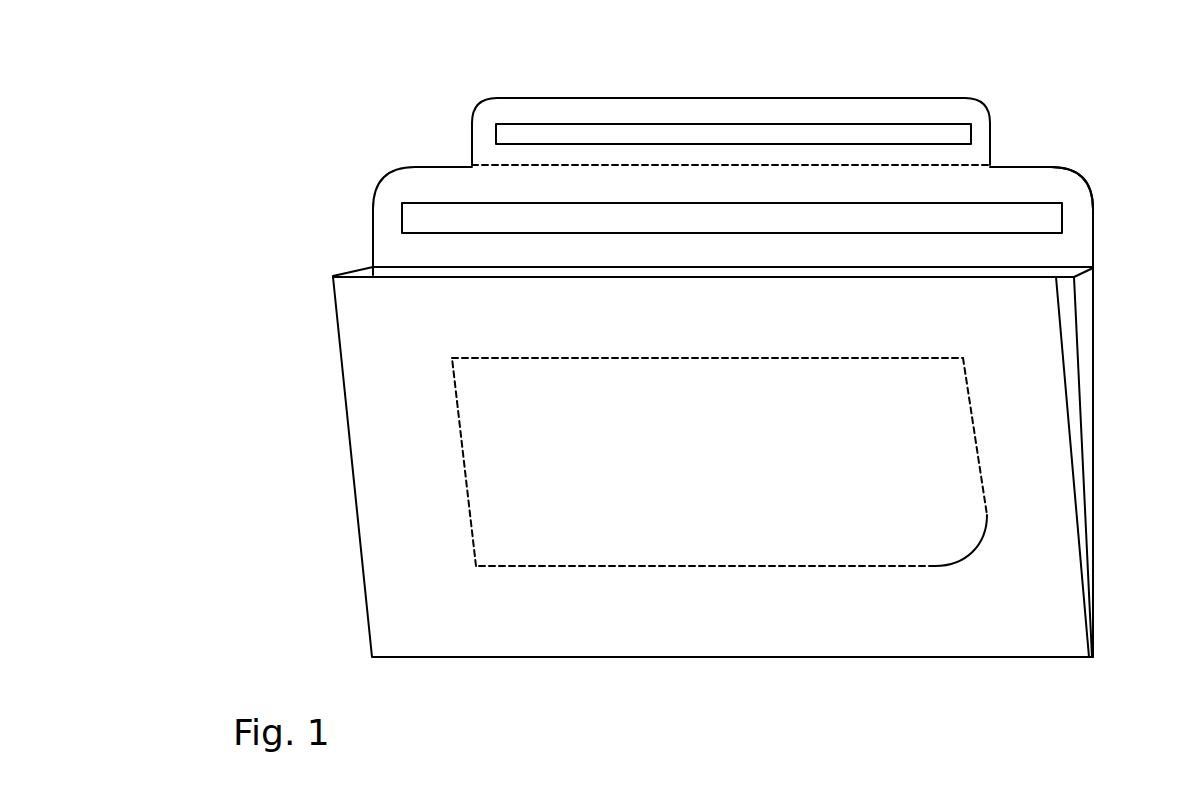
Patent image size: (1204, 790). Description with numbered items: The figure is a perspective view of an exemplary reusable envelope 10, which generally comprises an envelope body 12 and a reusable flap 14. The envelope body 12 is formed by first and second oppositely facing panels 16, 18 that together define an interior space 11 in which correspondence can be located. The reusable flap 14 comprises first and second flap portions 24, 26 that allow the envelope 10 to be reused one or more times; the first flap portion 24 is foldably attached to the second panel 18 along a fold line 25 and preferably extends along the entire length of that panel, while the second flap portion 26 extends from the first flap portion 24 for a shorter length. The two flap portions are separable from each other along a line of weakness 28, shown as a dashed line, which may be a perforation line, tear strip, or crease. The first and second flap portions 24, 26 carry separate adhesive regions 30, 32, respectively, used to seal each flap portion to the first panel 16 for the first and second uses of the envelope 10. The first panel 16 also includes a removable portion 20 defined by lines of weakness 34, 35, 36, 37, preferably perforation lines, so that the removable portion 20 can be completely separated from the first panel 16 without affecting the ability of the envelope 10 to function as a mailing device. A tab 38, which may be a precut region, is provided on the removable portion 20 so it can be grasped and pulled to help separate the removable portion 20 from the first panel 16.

The envelope 10 is at (455, 692).
The interior space 11 is at (1066, 268).
The envelope body 12 is at (949, 622).
The reusable flap 14 is at (992, 172).
The first panel 16 is at (1075, 583).
The second panel 18 is at (1093, 380).
The removable portion 20 is at (701, 493).
The first flap portion 24 is at (1063, 187).
The fold line 25 is at (1057, 267).
The second flap portion 26 is at (928, 108).
The line of weakness 28 is at (677, 165).
The adhesive region 30 is at (420, 213).
The adhesive region 32 is at (508, 130).
The line of weakness 34 is at (678, 358).
The line of weakness 35 is at (458, 428).
The line of weakness 36 is at (690, 566).
The line of weakness 37 is at (975, 418).
The tab 38 is at (953, 566).